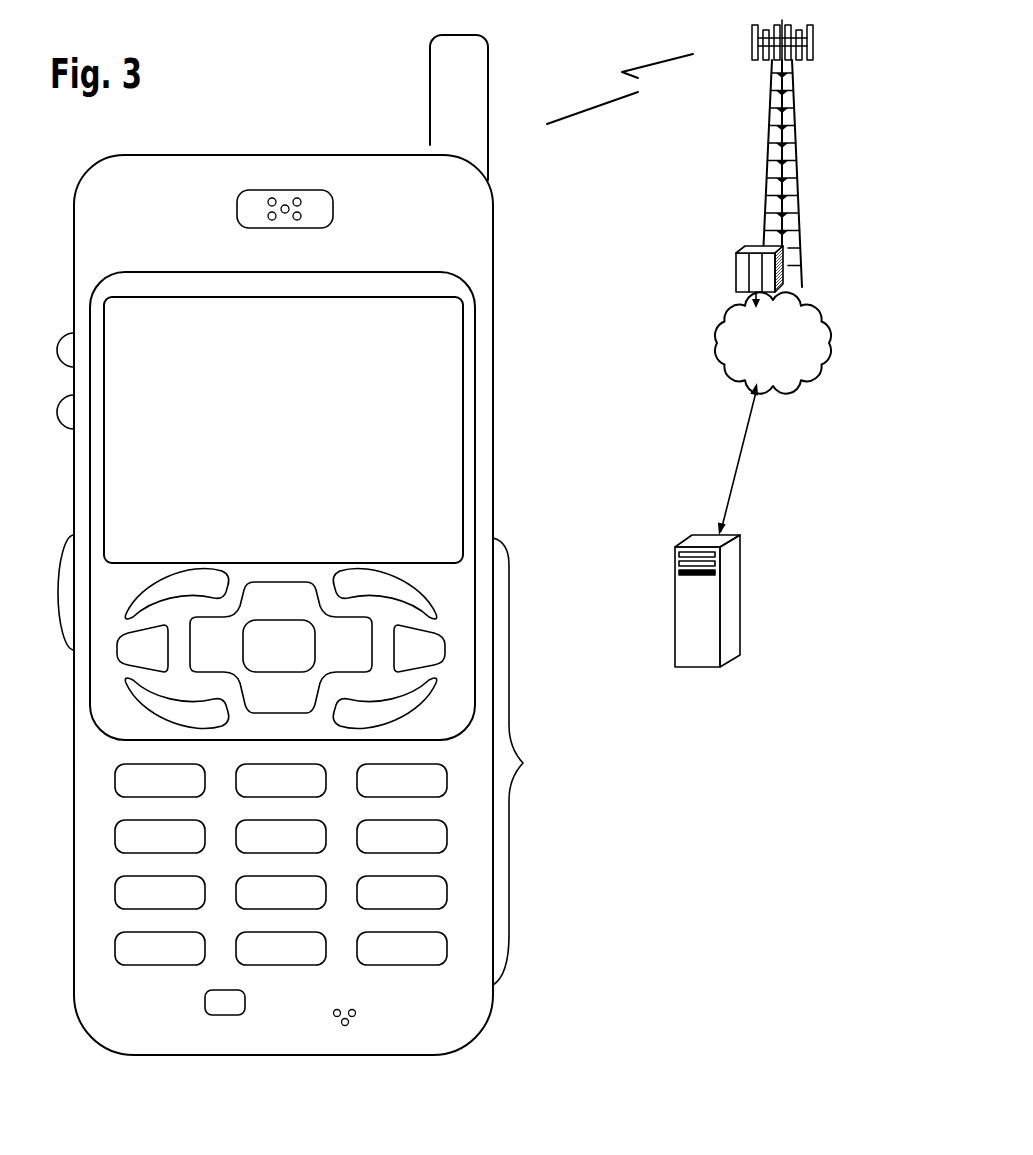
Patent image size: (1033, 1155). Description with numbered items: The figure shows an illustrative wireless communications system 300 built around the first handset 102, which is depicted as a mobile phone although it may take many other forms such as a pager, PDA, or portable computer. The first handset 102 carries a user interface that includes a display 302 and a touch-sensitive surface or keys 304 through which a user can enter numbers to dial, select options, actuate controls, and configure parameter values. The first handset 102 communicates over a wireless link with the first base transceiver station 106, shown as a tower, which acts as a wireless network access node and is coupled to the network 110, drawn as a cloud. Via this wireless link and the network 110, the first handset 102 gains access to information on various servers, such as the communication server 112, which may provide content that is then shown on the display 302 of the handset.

The wireless communications system 300 is at (241, 50).
The first handset 102 is at (133, 1055).
The display 302 is at (465, 347).
The keys 304 is at (529, 761).
The first base transceiver station 106 is at (766, 170).
The network 110 is at (718, 363).
The communication server 112 is at (692, 668).